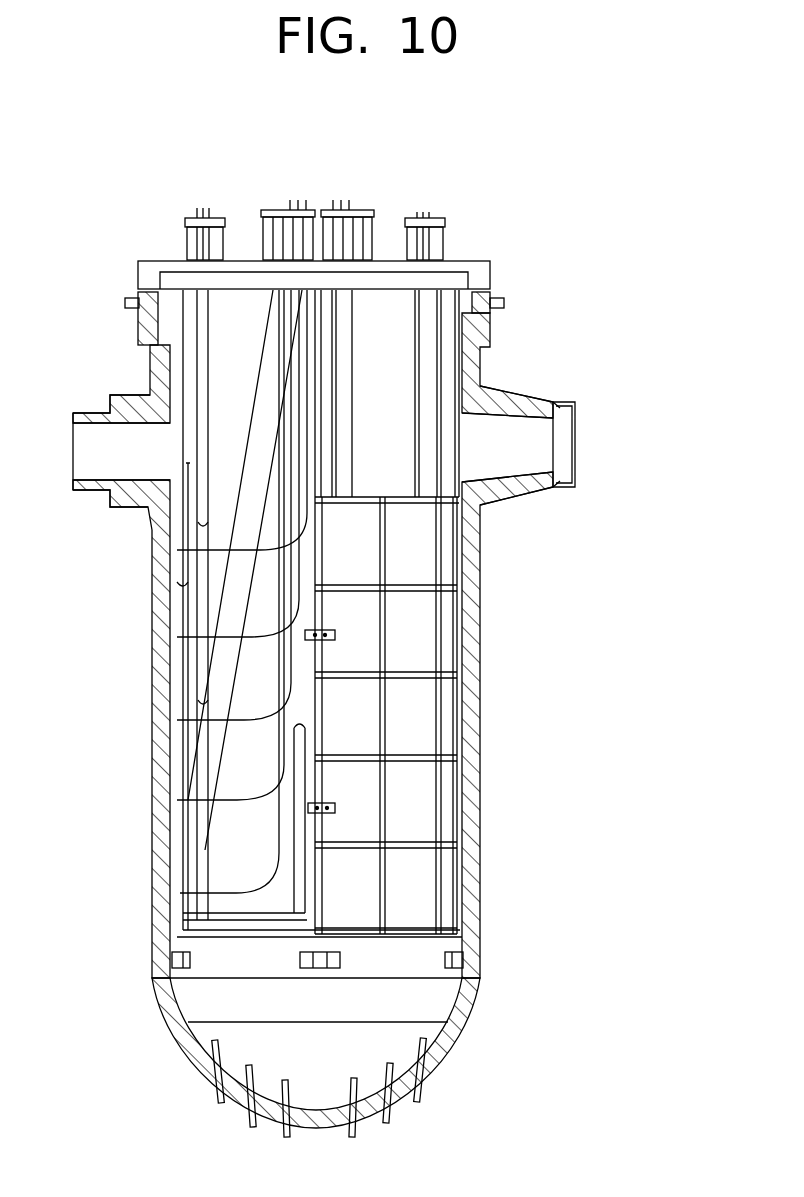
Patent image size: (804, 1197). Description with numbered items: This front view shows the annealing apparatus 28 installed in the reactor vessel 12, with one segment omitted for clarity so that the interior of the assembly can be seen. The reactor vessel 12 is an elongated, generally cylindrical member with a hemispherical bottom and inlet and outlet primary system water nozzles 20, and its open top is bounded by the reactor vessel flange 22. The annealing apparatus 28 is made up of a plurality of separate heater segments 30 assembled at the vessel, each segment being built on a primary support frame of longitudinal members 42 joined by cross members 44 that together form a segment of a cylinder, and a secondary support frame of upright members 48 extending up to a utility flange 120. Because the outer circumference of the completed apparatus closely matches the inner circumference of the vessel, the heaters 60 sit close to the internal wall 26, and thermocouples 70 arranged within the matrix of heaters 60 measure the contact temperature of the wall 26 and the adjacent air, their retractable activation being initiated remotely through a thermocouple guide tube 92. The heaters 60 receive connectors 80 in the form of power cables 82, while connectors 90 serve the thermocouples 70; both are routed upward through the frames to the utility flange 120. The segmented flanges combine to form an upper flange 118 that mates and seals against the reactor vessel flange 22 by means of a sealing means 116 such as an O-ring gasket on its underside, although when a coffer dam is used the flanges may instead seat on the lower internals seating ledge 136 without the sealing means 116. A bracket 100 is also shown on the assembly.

The reactor vessel 12 is at (485, 957).
The inlet and outlet primary system water nozzles 20 is at (103, 500).
The reactor vessel flange 22 is at (144, 309).
The internal wall 26 is at (173, 718).
The annealing apparatus 28 is at (208, 940).
The heater segments 30 is at (230, 777).
The longitudinal members 42 is at (352, 420).
The cross members 44 is at (260, 430).
The upright members 48 is at (186, 252).
The heaters 60 is at (187, 578).
The thermocouples 70 is at (187, 890).
The connectors 80 is at (200, 215).
The power cables 82 is at (229, 591).
The connectors 90 is at (307, 210).
The thermocouple guide tube 92 is at (245, 822).
The bracket 100 is at (338, 641).
The sealing means 116 is at (125, 300).
The upper flange 118 is at (480, 273).
The utility flange 120 is at (266, 212).
The lower internals seating ledge 136 is at (150, 345).